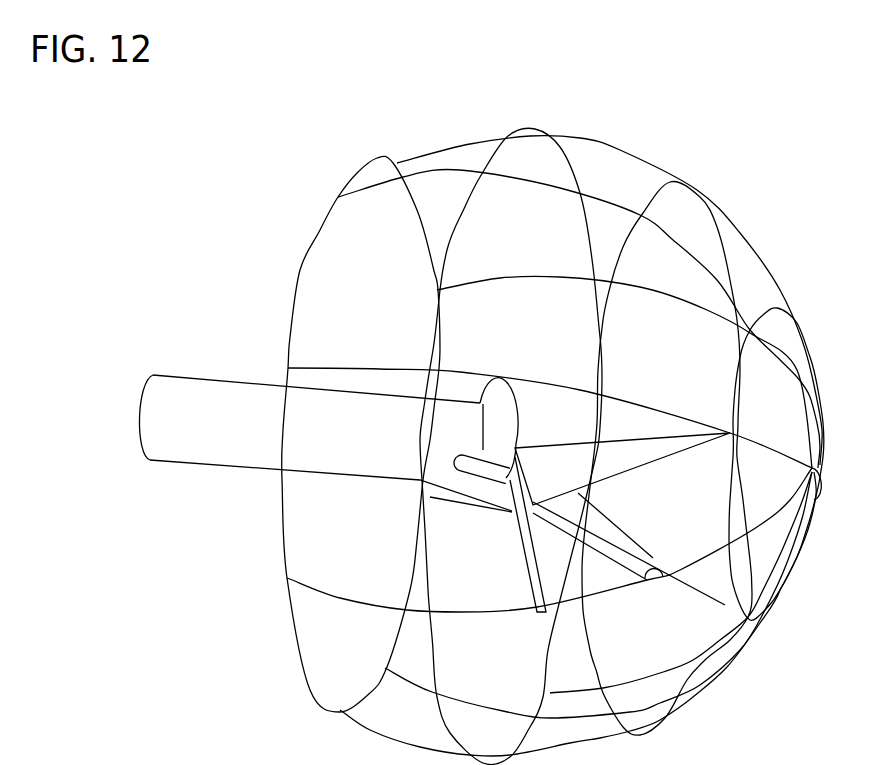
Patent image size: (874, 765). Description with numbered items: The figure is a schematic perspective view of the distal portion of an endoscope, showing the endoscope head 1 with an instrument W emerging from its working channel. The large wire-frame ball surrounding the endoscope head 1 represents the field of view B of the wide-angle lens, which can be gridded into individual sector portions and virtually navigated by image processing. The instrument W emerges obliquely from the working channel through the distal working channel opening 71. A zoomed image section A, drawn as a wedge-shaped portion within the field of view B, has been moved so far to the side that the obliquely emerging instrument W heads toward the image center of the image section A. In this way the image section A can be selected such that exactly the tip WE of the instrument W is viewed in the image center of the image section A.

The field of view B is at (629, 153).
The endoscope head 1 is at (205, 423).
The distal opening 71 is at (458, 455).
The zoomed image section A is at (670, 431).
The instrument W is at (497, 487).
The tip WE is at (673, 587).